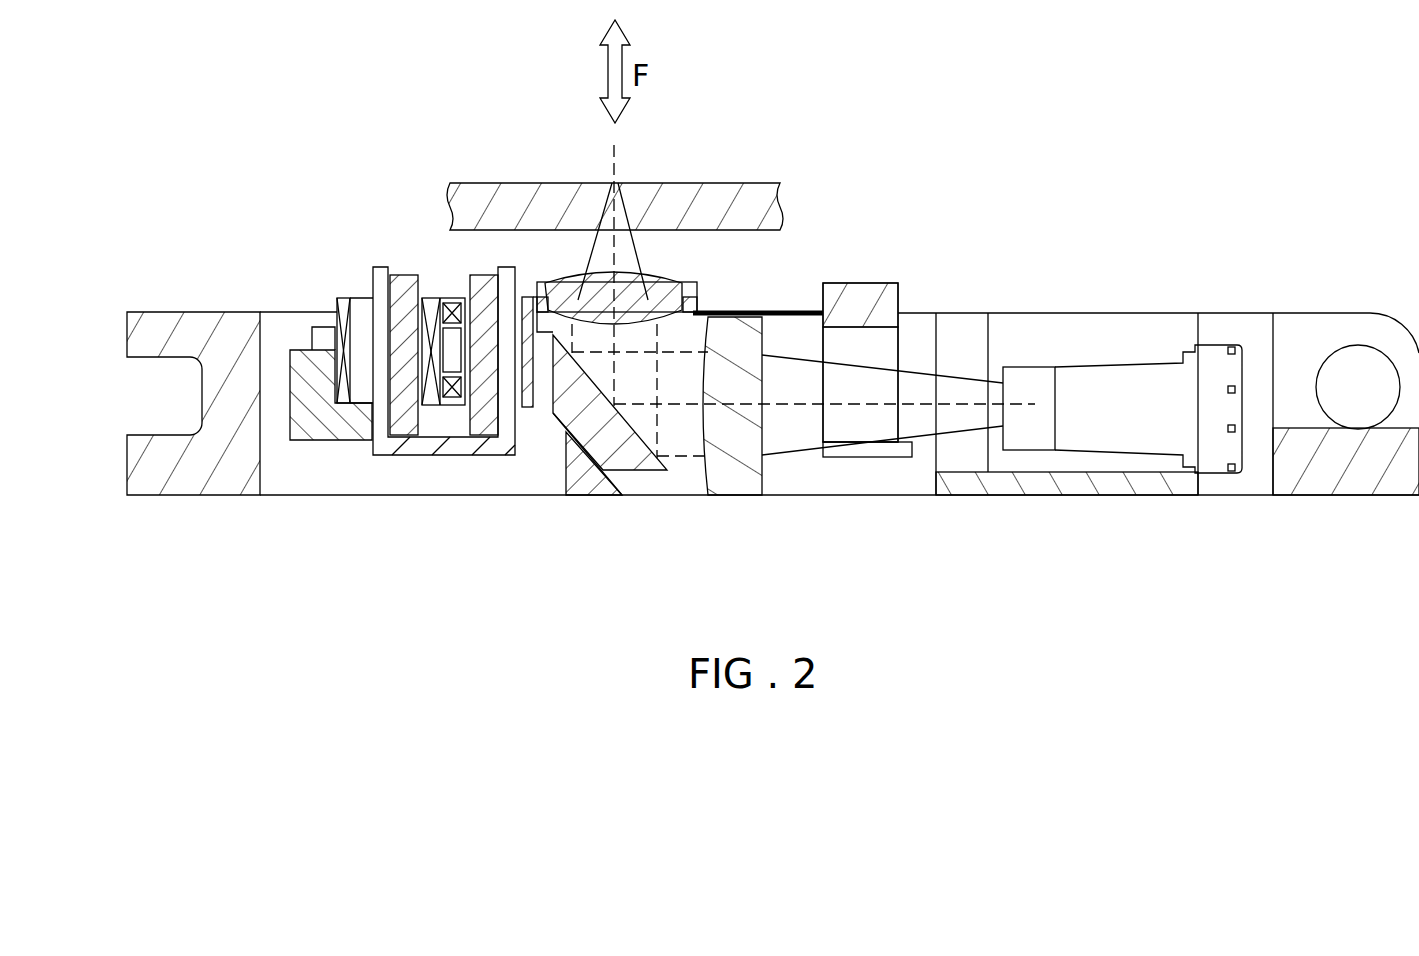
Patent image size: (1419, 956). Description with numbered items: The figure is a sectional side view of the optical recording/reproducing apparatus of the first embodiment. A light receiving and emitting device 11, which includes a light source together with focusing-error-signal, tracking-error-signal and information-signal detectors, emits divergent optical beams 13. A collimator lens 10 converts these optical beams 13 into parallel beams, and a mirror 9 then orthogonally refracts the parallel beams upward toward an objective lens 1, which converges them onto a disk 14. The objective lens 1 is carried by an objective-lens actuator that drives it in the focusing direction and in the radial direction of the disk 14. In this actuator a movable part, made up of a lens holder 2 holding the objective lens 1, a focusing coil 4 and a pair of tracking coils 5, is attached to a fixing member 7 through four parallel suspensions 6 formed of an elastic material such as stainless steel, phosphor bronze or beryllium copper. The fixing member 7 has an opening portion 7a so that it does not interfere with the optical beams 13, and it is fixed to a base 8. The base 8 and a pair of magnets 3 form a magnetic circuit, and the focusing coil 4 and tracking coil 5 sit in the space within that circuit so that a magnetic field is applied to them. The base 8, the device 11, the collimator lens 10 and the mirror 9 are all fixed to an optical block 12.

The objective lens 1 is at (643, 290).
The lens holder 2 is at (327, 428).
The magnets 3 is at (401, 287).
The focusing coil 4 is at (341, 298).
The tracking coils 5 is at (443, 401).
The suspensions 6 is at (722, 316).
The fixing member 7 is at (862, 300).
The opening portion 7a is at (866, 348).
The base 8 is at (484, 447).
The mirror 9 is at (618, 435).
The collimator lens 10 is at (742, 330).
The light receiving and emitting device 11 is at (1110, 410).
The optical block 12 is at (1232, 335).
The optical beams 13 is at (953, 430).
The disk 14 is at (515, 183).